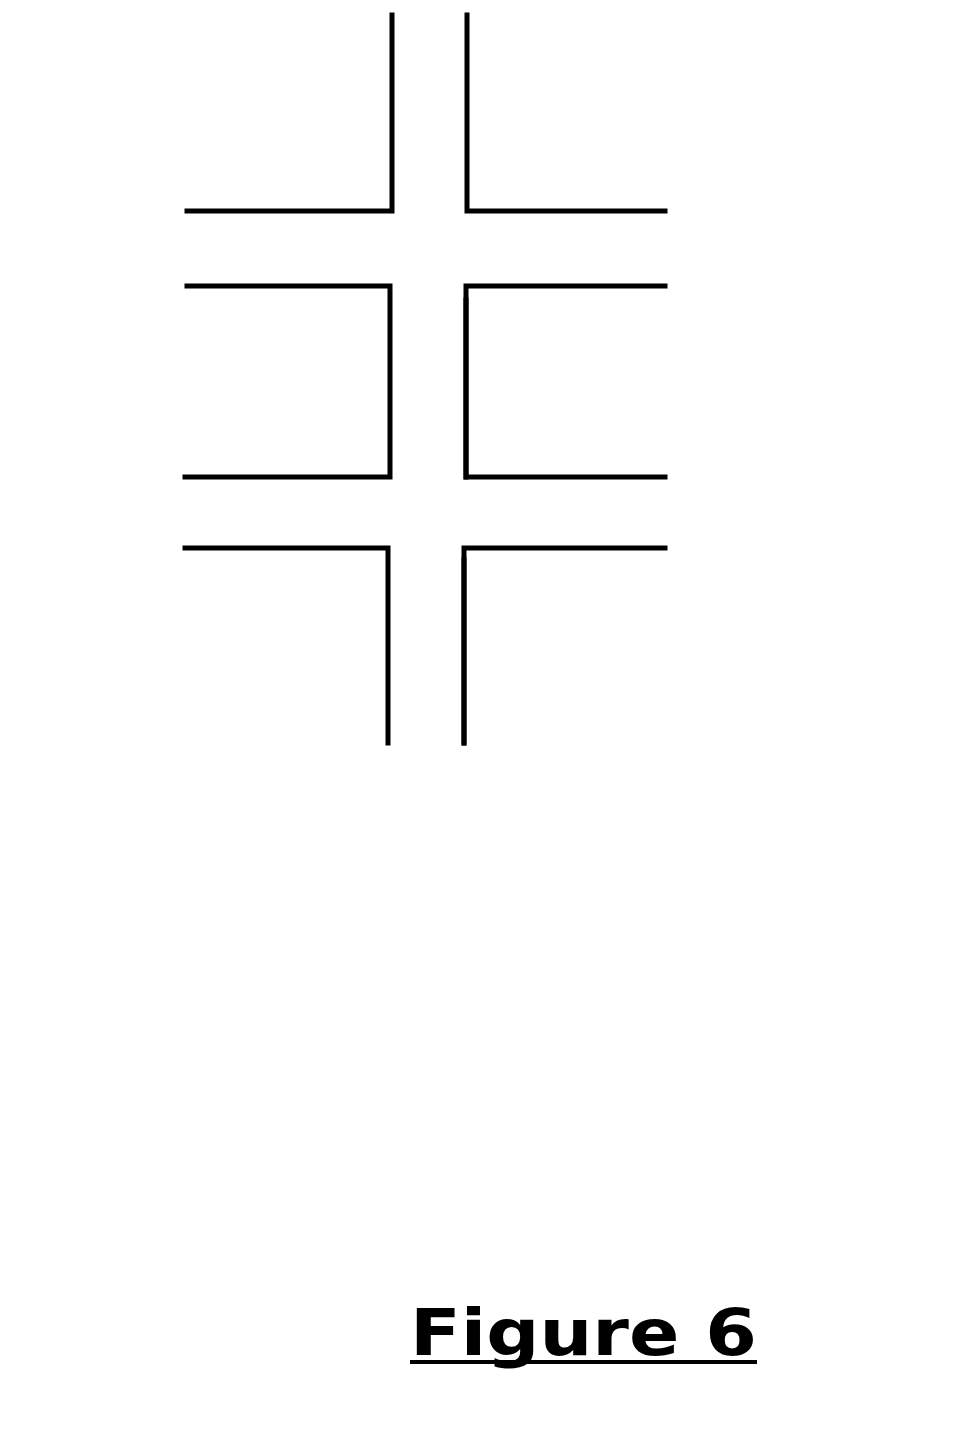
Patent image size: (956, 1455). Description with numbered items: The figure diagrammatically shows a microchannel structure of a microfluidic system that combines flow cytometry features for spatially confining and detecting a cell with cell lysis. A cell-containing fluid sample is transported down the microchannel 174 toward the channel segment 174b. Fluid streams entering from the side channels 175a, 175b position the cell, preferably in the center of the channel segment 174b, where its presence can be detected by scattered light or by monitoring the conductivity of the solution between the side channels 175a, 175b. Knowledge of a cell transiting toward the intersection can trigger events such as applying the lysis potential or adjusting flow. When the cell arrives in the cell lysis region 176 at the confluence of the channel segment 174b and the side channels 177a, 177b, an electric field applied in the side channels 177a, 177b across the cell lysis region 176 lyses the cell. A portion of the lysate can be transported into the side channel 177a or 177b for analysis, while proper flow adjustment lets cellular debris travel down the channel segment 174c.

The microchannel 174 is at (492, 121).
The channel segment 174b is at (495, 410).
The channel segment 174c is at (472, 647).
The side channel 175a is at (205, 296).
The side channel 175b is at (650, 297).
The cell lysis region 176 is at (412, 495).
The side channel 177a is at (203, 560).
The side channel 177b is at (638, 558).